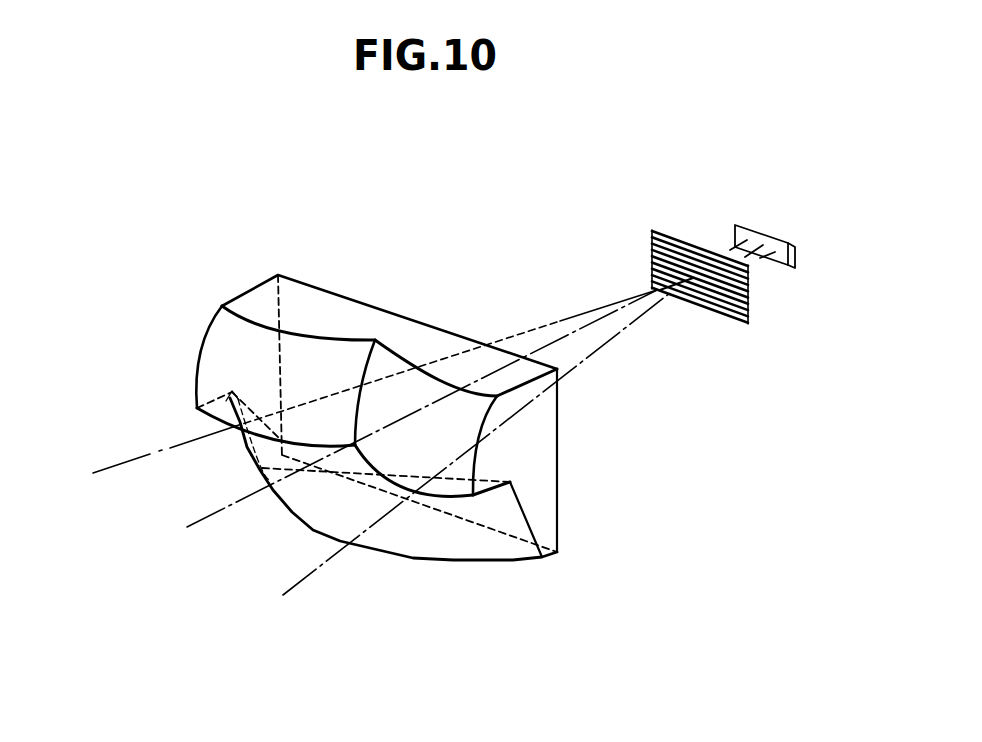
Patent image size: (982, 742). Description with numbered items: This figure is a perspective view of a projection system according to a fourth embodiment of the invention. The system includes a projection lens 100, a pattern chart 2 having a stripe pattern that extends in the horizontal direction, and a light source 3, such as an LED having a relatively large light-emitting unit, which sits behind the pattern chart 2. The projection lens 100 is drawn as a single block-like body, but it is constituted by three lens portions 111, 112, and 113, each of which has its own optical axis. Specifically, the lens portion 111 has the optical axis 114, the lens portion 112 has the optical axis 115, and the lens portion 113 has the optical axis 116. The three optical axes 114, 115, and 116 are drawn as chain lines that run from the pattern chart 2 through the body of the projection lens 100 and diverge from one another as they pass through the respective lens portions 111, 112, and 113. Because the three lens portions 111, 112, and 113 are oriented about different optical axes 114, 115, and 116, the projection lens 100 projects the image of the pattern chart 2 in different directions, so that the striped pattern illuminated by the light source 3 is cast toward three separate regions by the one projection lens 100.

The projection lens 100 is at (357, 421).
The lens portion 111 is at (473, 553).
The lens portion 112 is at (207, 362).
The lens portion 113 is at (468, 422).
The optical axis 114 is at (213, 514).
The optical axis 115 is at (135, 461).
The optical axis 116 is at (313, 578).
The pattern chart 2 is at (650, 257).
The light source 3 is at (733, 225).